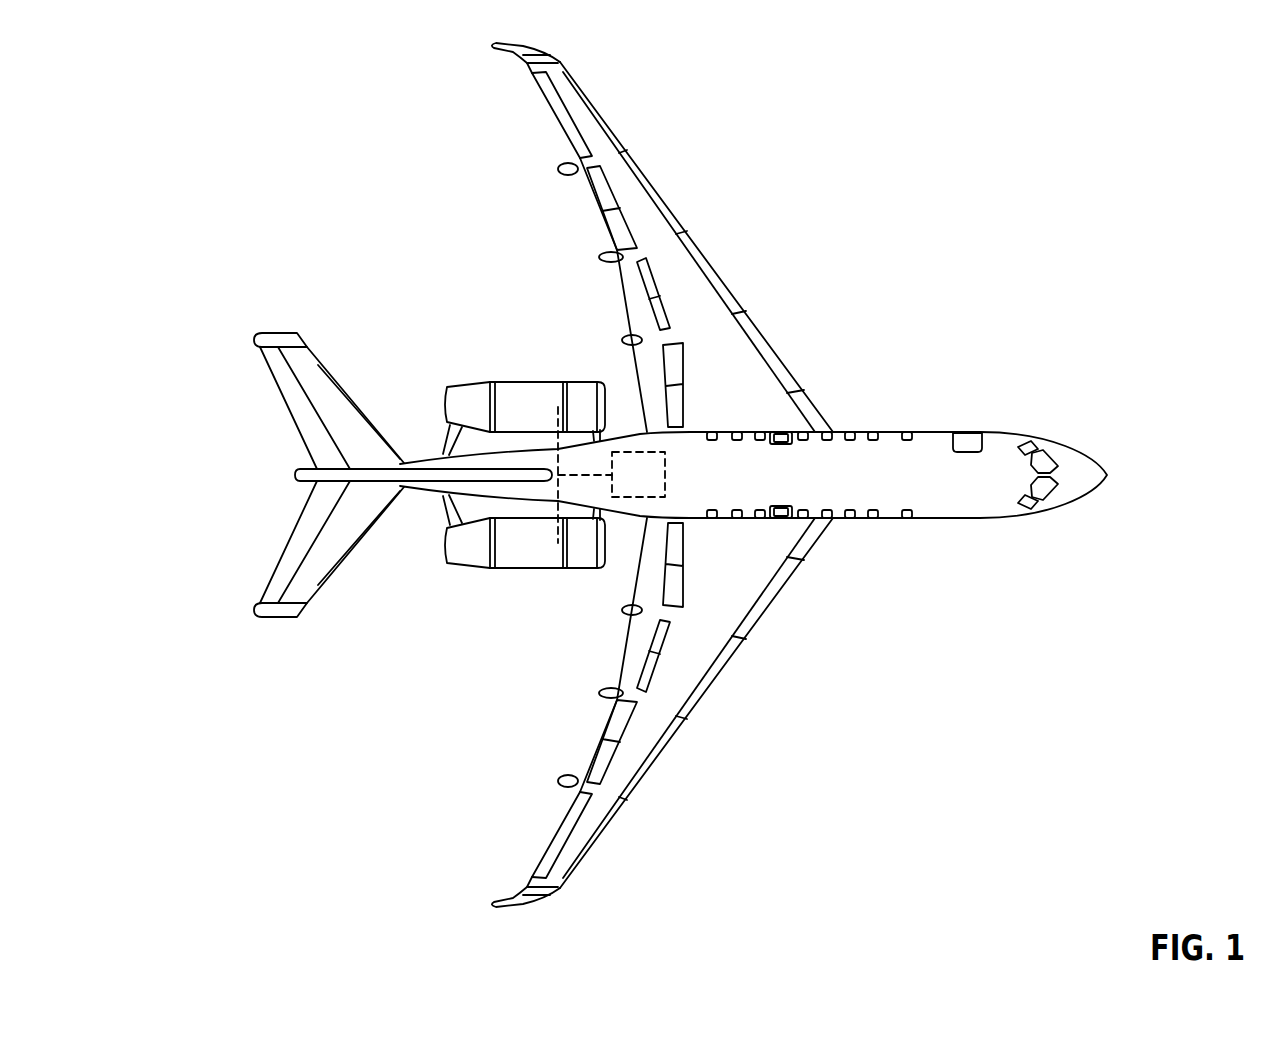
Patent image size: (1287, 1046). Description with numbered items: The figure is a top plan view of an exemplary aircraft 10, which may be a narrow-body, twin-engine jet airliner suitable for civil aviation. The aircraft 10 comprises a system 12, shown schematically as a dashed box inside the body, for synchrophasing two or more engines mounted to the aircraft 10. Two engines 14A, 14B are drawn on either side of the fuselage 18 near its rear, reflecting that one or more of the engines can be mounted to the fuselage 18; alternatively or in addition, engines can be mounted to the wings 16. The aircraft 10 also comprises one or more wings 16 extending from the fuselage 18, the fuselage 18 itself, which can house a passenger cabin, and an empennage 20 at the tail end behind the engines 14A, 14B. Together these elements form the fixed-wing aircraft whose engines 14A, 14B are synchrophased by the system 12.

The aircraft 10 is at (1097, 156).
The system 12 is at (656, 491).
The engine 14A is at (525, 390).
The engine 14B is at (525, 558).
The wing 16 is at (774, 295).
The fuselage 18 is at (923, 491).
The empennage 20 is at (261, 467).